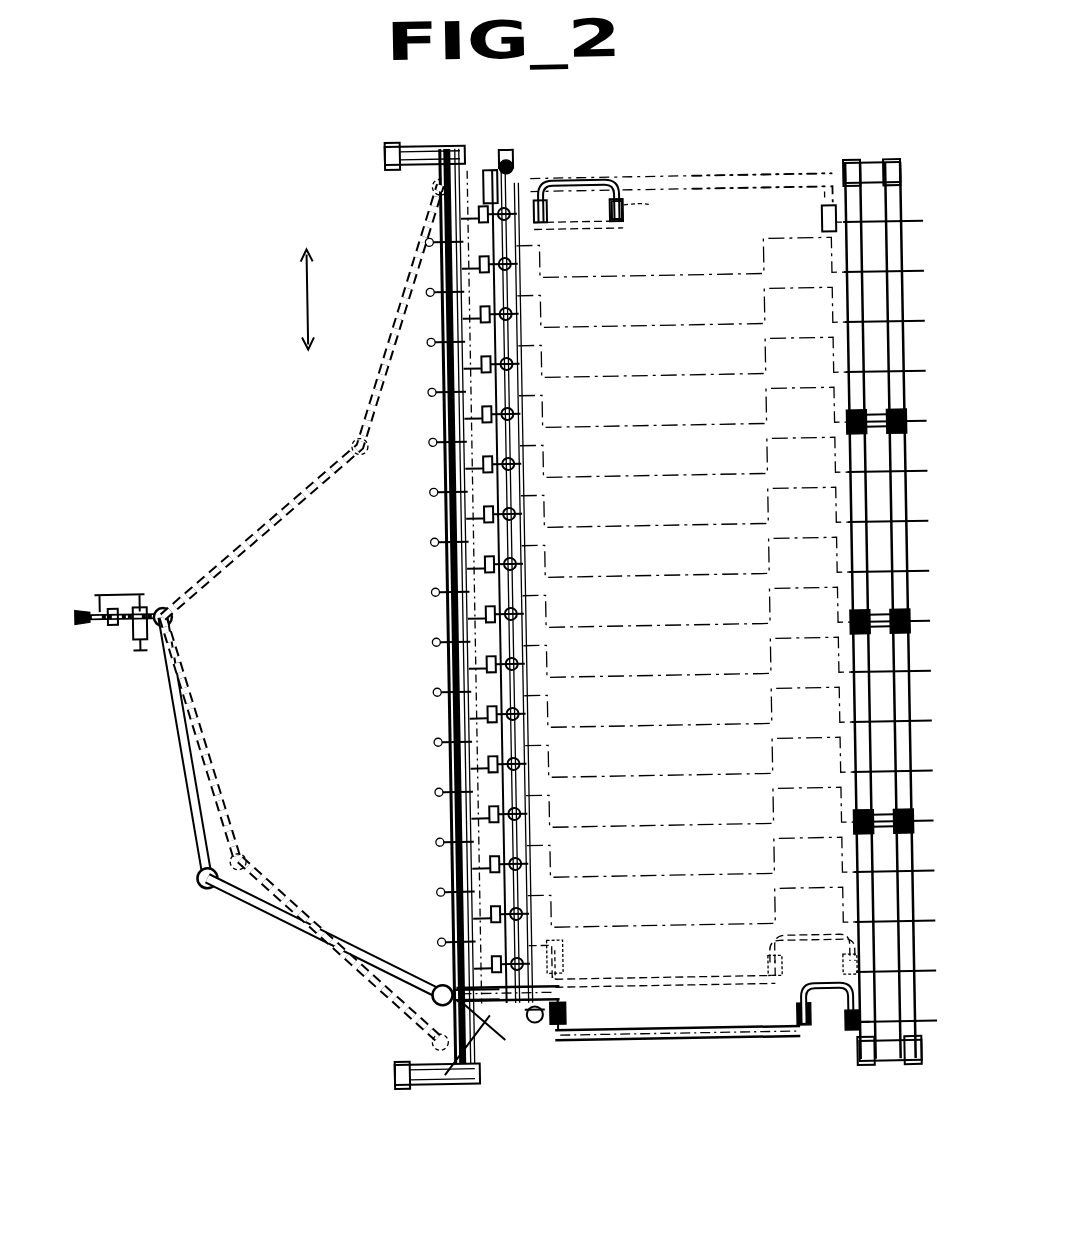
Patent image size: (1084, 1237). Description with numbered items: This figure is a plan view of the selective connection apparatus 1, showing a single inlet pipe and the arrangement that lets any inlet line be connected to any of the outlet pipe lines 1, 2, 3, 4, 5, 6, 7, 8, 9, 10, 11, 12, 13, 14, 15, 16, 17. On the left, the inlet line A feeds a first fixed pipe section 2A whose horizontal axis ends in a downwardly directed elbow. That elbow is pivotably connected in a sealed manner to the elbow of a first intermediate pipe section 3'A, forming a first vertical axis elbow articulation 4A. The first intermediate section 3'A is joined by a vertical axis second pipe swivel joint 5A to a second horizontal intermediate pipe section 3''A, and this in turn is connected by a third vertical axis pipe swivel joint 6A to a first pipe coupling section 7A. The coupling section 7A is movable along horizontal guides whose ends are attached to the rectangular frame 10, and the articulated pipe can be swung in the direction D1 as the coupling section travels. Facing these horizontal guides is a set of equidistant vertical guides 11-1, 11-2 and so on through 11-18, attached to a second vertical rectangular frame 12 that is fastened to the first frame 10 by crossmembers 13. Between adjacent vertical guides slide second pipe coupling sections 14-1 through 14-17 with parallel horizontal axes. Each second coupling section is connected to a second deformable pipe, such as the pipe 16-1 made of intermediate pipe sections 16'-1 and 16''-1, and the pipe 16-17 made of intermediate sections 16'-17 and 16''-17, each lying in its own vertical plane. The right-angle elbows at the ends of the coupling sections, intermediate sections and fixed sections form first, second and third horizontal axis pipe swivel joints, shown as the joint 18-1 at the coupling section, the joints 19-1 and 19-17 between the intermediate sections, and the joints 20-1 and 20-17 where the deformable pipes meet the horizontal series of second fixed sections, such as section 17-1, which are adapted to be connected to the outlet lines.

The selective connection apparatus 1 is at (910, 1023).
The outlet pipe line 2 is at (718, 966).
The outlet pipe line 3 is at (699, 915).
The outlet pipe line 4 is at (698, 865).
The outlet pipe line 5 is at (697, 815).
The outlet pipe line 6 is at (696, 765).
The outlet pipe line 7 is at (695, 715).
The outlet pipe line 8 is at (694, 665).
The outlet pipe line 9 is at (694, 615).
The rectangular frame 10 is at (438, 166).
The outlet pipe line 11 is at (692, 515).
The second vertical rectangular frame 12 is at (516, 292).
The crossmembers 13 is at (508, 469).
The outlet pipe line 14 is at (689, 365).
The outlet pipe line 15 is at (688, 315).
The outlet pipe line 16 is at (687, 265).
The outlet pipe line 17 is at (686, 208).
The vertical guide 11-18 is at (518, 162).
The second pipe coupling section 14-17 is at (568, 180).
The second deformable pipe 16-17 is at (834, 162).
The intermediate pipe section 16''-17 is at (681, 216).
The intermediate pipe section 16'-17 is at (590, 246).
The second horizontal axis pipe swivel joint 19-17 is at (637, 218).
The third horizontal axis pipe swivel joint 20-17 is at (830, 213).
The direction arrow D1 is at (291, 299).
The inlet pipe line A is at (122, 597).
The first fixed pipe section 2A is at (136, 627).
The first vertical axis elbow articulation 4A is at (180, 609).
The first intermediate pipe section 3'A is at (151, 748).
The second pipe swivel joint 5A is at (192, 871).
The second intermediate pipe section 3''A is at (306, 833).
The third vertical axis pipe swivel joint 6A is at (434, 981).
The first pipe coupling section 7A is at (463, 1006).
The vertical guide 11-1 is at (476, 1007).
The second pipe coupling section 14-1 is at (540, 1025).
The first horizontal axis pipe swivel joint 18-1 is at (563, 1008).
The vertical guide 11-2 is at (539, 960).
The intermediate pipe section 16'-1 is at (678, 1055).
The second deformable pipe 16-1 is at (774, 1049).
The second horizontal axis pipe swivel joint 19-1 is at (788, 1012).
The intermediate pipe section 16''-1 is at (817, 1045).
The third horizontal axis pipe swivel joint 20-1 is at (838, 1038).
The second fixed section 17-1 is at (817, 955).